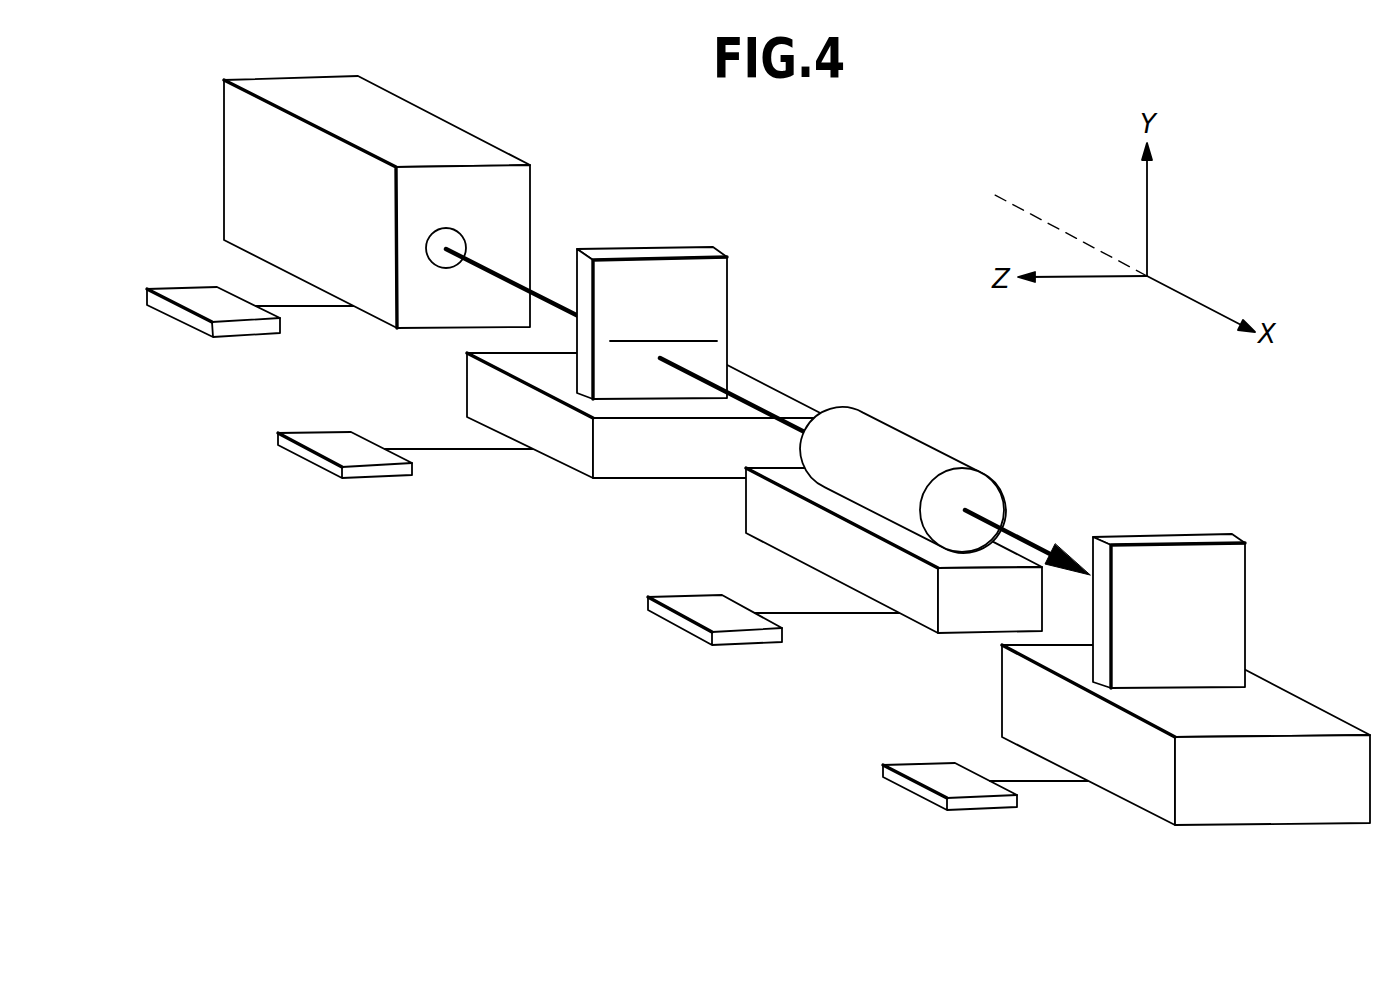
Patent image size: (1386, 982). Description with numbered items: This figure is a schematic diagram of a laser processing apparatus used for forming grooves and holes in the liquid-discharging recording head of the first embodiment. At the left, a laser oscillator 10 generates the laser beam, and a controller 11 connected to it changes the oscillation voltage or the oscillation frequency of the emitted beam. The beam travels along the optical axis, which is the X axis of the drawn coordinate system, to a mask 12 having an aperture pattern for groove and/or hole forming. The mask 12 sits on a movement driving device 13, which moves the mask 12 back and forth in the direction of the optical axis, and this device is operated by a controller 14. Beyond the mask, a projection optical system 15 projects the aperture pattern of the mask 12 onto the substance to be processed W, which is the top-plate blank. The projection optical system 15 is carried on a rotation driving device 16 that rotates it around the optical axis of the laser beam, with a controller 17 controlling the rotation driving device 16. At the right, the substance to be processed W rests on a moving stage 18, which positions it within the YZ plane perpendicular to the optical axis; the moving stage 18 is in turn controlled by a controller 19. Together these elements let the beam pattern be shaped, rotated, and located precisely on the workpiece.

The laser oscillator 10 is at (467, 138).
The controller 11 is at (230, 338).
The mask 12 is at (717, 252).
The movement driving device 13 is at (570, 449).
The controller 14 is at (367, 480).
The projection optical system 15 is at (895, 428).
The rotation driving device 16 is at (910, 622).
The controller 17 is at (733, 647).
The moving stage 18 is at (1293, 692).
The controller 19 is at (967, 812).
The substance to be processed W is at (1240, 535).